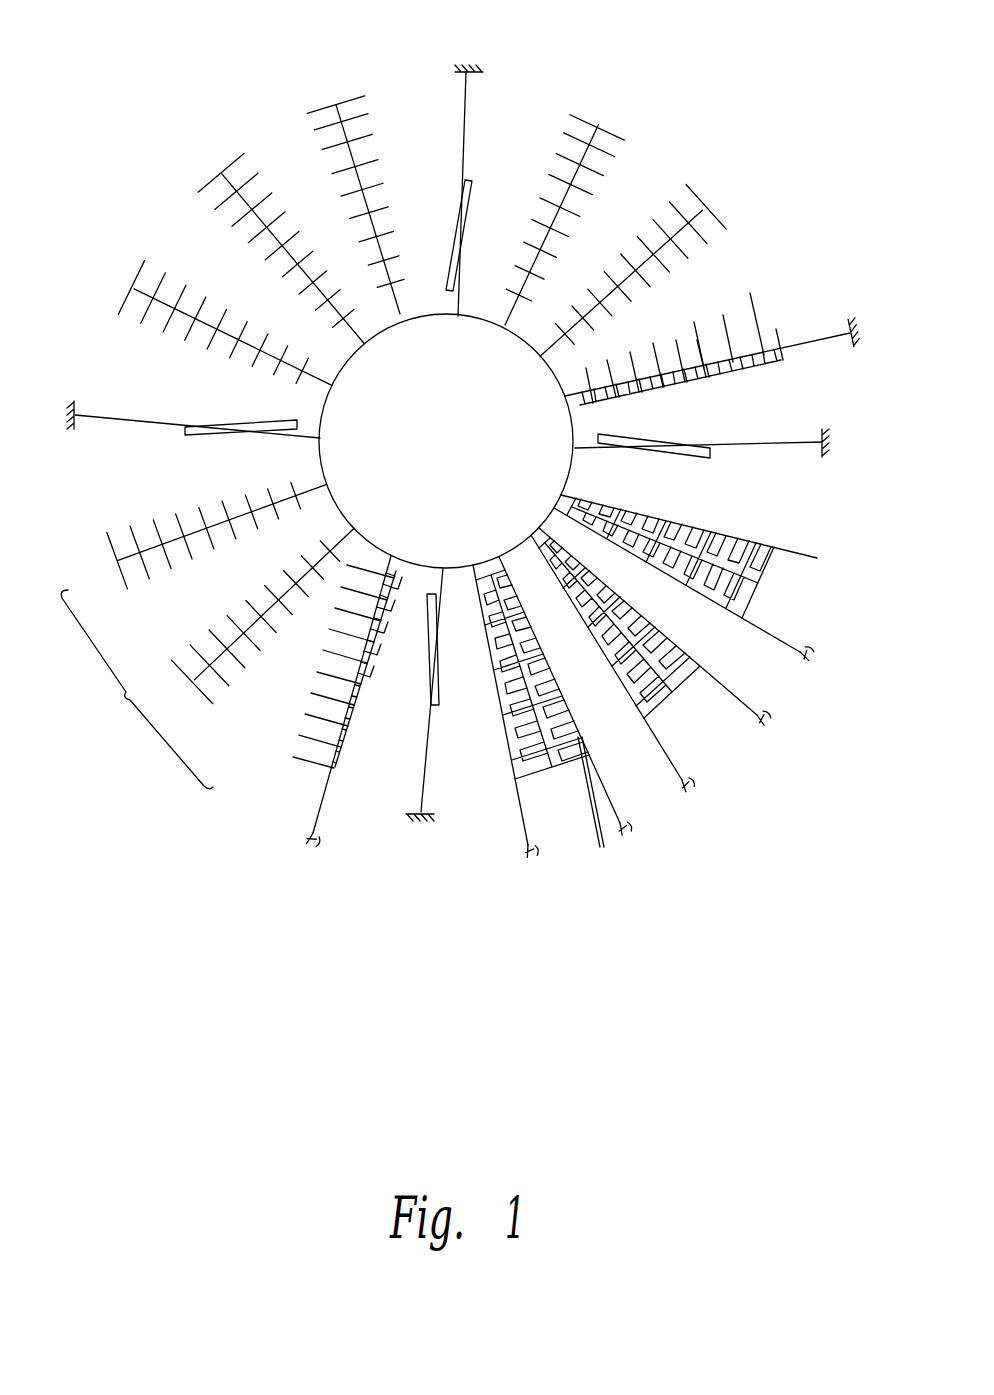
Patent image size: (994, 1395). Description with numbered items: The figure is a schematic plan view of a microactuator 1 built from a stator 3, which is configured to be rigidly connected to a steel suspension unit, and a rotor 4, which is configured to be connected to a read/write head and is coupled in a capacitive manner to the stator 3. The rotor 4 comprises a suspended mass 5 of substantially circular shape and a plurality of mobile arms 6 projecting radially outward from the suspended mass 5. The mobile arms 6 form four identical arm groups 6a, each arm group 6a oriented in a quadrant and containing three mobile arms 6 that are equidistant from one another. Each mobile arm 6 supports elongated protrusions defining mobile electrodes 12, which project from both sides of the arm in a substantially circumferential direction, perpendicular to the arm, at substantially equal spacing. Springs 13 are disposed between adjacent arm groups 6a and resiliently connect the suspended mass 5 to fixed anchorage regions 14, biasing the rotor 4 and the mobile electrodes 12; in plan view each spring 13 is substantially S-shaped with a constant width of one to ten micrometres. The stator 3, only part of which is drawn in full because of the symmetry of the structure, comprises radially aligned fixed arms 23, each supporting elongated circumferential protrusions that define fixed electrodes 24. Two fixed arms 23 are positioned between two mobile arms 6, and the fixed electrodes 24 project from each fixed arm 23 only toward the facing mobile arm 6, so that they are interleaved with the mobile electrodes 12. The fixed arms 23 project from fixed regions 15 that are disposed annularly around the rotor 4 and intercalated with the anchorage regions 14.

The microactuator 1 is at (166, 874).
The stator 3 is at (499, 738).
The rotor 4 is at (266, 88).
The suspended mass 5 is at (447, 449).
The mobile arm 6 is at (690, 196).
The arm group 6a is at (137, 689).
The mobile electrode 12 is at (742, 302).
The spring 13 is at (462, 114).
The anchorage region 14 is at (475, 73).
The fixed region 15 is at (528, 856).
The fixed arm 23 is at (633, 397).
The fixed electrode 24 is at (508, 678).